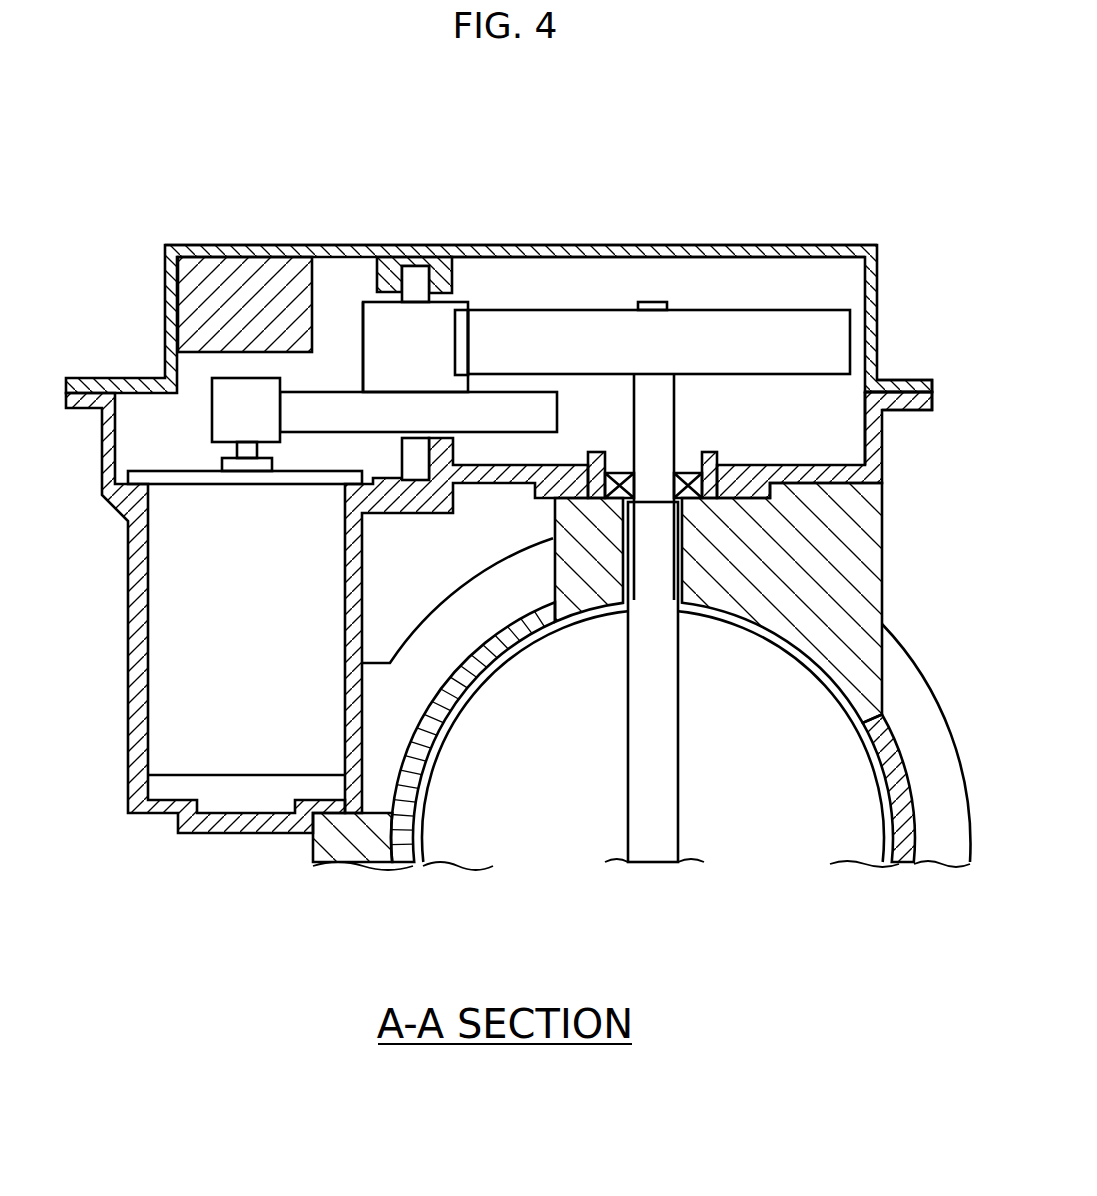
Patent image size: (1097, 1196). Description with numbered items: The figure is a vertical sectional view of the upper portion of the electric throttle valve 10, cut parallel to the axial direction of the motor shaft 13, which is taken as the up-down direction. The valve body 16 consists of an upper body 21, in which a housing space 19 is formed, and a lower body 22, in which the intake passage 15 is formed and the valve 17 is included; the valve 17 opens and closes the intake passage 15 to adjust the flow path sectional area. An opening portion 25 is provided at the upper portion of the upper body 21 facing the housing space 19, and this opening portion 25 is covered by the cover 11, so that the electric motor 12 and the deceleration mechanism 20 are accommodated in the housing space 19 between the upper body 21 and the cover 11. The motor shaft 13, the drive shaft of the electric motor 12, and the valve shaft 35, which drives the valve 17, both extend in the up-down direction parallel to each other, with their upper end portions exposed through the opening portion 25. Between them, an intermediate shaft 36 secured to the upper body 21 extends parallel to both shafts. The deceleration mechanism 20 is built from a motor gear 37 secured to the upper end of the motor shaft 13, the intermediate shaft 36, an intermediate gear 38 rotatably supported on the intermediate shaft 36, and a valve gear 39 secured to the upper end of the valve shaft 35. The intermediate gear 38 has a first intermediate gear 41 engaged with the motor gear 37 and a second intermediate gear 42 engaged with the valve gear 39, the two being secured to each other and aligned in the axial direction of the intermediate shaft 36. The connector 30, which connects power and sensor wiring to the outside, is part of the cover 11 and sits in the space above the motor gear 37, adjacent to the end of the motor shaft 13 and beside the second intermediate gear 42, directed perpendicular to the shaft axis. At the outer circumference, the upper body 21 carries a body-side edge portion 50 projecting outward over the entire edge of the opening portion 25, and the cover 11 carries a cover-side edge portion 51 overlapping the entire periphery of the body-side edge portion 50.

The electric throttle valve 10 is at (789, 199).
The cover 11 is at (828, 243).
The electric motor 12 is at (195, 648).
The motor shaft 13 is at (235, 460).
The intake passage 15 is at (884, 862).
The valve body 16 is at (917, 650).
The valve 17 is at (773, 810).
The housing space 19 is at (575, 285).
The deceleration mechanism 20 is at (473, 293).
The upper body 21 is at (882, 452).
The lower body 22 is at (887, 520).
The opening portion 25 is at (852, 407).
The connector 30 is at (202, 278).
The valve shaft 35 is at (653, 840).
The intermediate shaft 36 is at (414, 263).
The motor gear 37 is at (207, 387).
The intermediate gear 38 is at (368, 293).
The valve gear 39 is at (716, 322).
The first intermediate gear 41 is at (300, 387).
The second intermediate gear 42 is at (362, 340).
The body-side edge portion 50 is at (905, 412).
The cover-side edge portion 51 is at (910, 378).